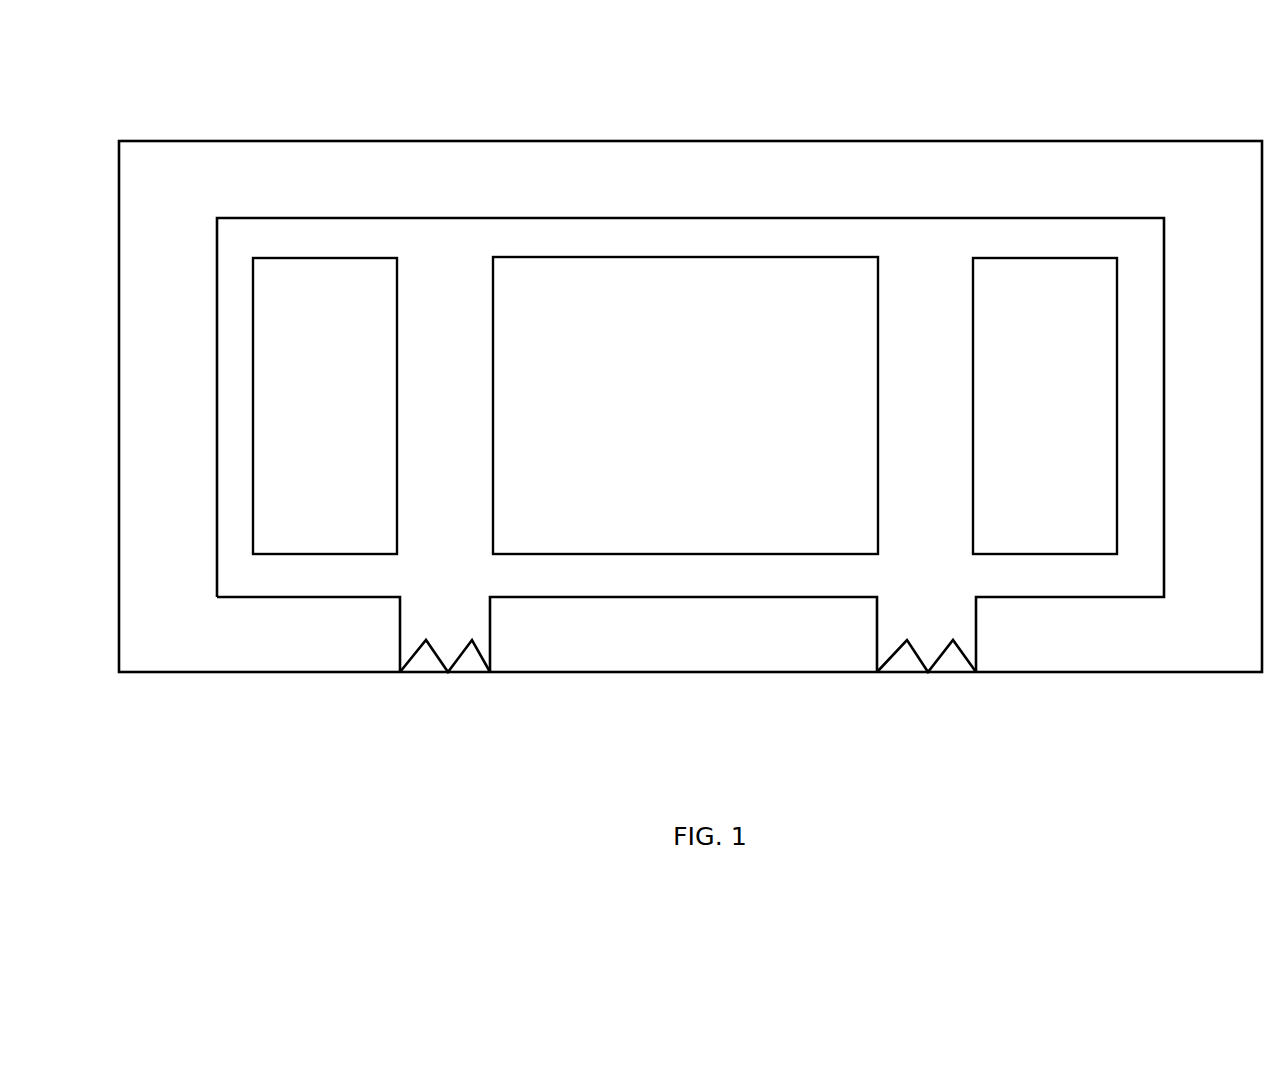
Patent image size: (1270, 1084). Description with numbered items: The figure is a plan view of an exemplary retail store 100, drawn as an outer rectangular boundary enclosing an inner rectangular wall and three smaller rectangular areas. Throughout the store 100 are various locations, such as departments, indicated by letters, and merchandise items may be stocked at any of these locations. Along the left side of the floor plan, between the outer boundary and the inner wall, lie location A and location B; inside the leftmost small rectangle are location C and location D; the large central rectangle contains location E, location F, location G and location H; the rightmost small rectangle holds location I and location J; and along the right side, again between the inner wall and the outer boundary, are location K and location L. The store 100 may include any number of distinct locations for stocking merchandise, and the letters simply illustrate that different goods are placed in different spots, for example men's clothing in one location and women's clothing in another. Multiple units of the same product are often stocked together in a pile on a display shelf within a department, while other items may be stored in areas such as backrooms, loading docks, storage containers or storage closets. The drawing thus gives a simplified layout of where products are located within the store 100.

The retail store 100 is at (690, 357).
The location A is at (159, 310).
The location B is at (159, 506).
The location C is at (332, 310).
The location D is at (331, 506).
The location E is at (558, 310).
The location F is at (558, 506).
The location G is at (803, 310).
The location H is at (802, 506).
The location I is at (1043, 310).
The location J is at (1042, 506).
The location K is at (1228, 310).
The location L is at (1228, 506).